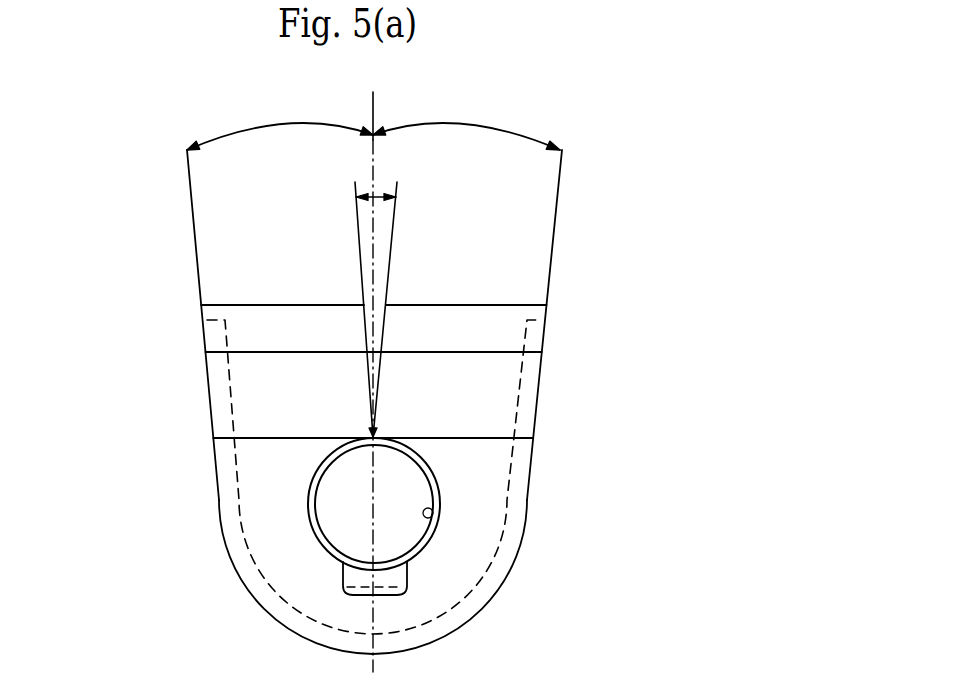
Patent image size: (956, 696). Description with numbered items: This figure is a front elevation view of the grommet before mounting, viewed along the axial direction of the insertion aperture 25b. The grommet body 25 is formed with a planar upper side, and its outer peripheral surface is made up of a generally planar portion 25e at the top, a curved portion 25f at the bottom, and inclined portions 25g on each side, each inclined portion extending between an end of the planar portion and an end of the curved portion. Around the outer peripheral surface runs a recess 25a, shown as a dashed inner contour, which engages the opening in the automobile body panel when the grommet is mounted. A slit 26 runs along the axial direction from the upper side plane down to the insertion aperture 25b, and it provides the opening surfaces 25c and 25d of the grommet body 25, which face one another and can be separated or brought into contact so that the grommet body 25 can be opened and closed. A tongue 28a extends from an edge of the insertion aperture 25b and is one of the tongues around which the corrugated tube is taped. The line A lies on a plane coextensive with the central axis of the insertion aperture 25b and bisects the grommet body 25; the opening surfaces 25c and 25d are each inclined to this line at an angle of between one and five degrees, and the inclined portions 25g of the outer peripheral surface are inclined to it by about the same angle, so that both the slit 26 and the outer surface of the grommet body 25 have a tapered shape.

The grommet body 25 is at (547, 333).
The recess 25a is at (230, 392).
The insertion aperture 25b is at (432, 520).
The opening surface 25c is at (365, 321).
The opening surface 25d is at (386, 321).
The planar portion 25e is at (497, 302).
The curved portion 25f is at (468, 625).
The inclined portion 25g is at (212, 425).
The slit 26 is at (385, 303).
The tongue 28a is at (400, 593).
The line A is at (373, 109).